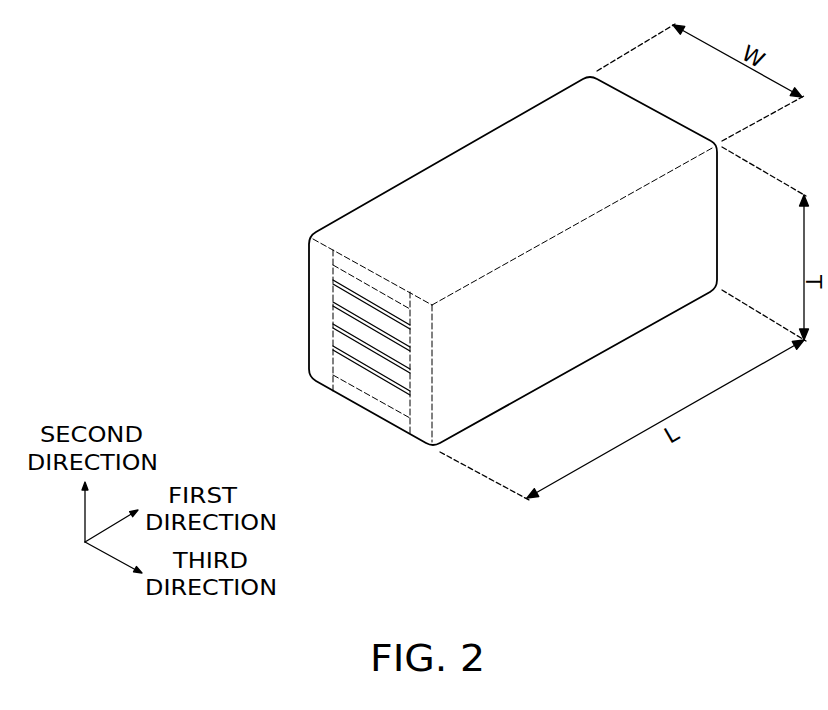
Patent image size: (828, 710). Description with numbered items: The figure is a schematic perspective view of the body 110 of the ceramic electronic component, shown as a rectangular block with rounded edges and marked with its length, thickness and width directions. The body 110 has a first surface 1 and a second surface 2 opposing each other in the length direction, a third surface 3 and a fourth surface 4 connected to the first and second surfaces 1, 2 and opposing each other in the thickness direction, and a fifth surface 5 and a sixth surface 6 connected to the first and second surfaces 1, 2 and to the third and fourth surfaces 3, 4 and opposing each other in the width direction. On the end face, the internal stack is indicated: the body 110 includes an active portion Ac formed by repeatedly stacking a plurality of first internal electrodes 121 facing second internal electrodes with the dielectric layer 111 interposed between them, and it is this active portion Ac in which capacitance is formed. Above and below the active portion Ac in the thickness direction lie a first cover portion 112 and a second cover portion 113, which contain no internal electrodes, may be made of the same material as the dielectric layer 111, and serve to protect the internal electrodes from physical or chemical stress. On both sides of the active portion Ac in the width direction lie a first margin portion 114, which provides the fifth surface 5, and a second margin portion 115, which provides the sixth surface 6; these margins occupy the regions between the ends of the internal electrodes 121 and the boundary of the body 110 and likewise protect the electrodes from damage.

The body 110 is at (340, 62).
The first surface 1 is at (358, 415).
The second surface 2 is at (686, 116).
The third surface 3 is at (507, 156).
The fourth surface 4 is at (538, 409).
The fifth surface 5 is at (360, 195).
The sixth surface 6 is at (603, 326).
The dielectric layer 111 is at (332, 331).
The first cover portion 112 is at (346, 268).
The second cover portion 113 is at (351, 390).
The first margin portion 114 is at (321, 368).
The second margin portion 115 is at (423, 428).
The first internal electrode 121 is at (352, 297).
The active portion Ac is at (419, 383).